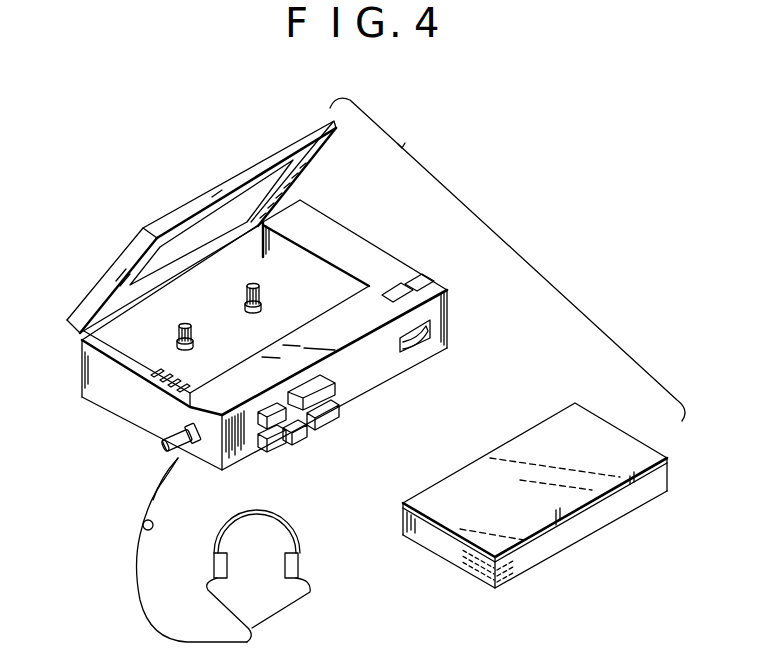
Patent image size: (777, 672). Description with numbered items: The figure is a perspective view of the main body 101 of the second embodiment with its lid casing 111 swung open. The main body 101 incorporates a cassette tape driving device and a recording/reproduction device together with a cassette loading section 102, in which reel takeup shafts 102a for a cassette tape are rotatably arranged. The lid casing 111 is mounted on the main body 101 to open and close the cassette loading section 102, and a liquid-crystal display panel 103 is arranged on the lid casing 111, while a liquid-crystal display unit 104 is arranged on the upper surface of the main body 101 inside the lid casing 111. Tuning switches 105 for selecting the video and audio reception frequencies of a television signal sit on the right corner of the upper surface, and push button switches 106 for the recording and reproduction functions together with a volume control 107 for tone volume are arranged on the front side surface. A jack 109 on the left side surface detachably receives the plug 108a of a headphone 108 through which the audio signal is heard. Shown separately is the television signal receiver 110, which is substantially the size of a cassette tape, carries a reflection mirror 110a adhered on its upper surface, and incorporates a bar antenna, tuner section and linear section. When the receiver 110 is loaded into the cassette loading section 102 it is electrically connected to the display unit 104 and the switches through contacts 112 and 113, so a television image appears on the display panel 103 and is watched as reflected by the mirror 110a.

The main body 101 is at (105, 414).
The cassette loading section 102 is at (132, 358).
The reel takeup shafts 102a is at (258, 284).
The liquid-crystal display panel 103 is at (268, 189).
The liquid-crystal display unit 104 is at (321, 114).
The tuning switches 105 is at (398, 292).
The push button switches 106 is at (340, 395).
The volume control 107 is at (430, 328).
The headphone 108 is at (272, 514).
The plug 108a is at (182, 456).
The jack 109 is at (165, 442).
The television signal receiver 110 is at (578, 532).
The reflection mirror 110a is at (588, 423).
The lid casing 111 is at (321, 141).
The contacts 112 is at (476, 578).
The contacts 113 is at (168, 357).